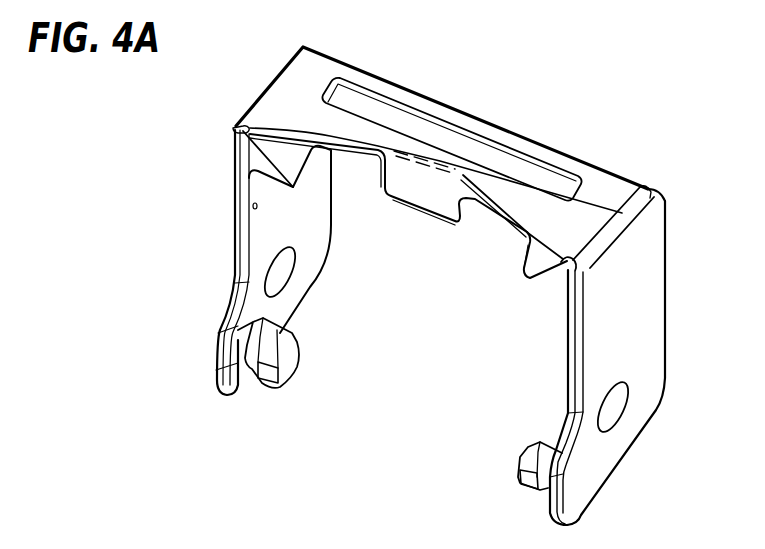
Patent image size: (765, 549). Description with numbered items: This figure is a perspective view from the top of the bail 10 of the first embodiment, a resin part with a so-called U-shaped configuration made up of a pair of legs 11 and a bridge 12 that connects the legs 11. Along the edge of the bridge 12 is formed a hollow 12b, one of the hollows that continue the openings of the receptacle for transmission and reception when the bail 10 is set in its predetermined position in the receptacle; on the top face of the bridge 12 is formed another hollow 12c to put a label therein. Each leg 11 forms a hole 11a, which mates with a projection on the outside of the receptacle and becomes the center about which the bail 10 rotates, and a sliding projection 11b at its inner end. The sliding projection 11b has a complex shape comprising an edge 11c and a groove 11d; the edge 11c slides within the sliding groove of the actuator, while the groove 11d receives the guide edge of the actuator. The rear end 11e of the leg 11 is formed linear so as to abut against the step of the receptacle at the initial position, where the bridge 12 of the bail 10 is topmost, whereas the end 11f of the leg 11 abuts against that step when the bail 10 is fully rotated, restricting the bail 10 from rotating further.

The bail 10 is at (626, 126).
The leg 11 is at (318, 229).
The hole 11a is at (268, 271).
The sliding projection 11b is at (294, 371).
The edge 11c is at (262, 383).
The groove 11d is at (238, 386).
The rear end 11e is at (665, 308).
The end 11f is at (582, 518).
The bridge 12 is at (520, 138).
The hollow 12b is at (368, 177).
The hollow 12c is at (449, 124).